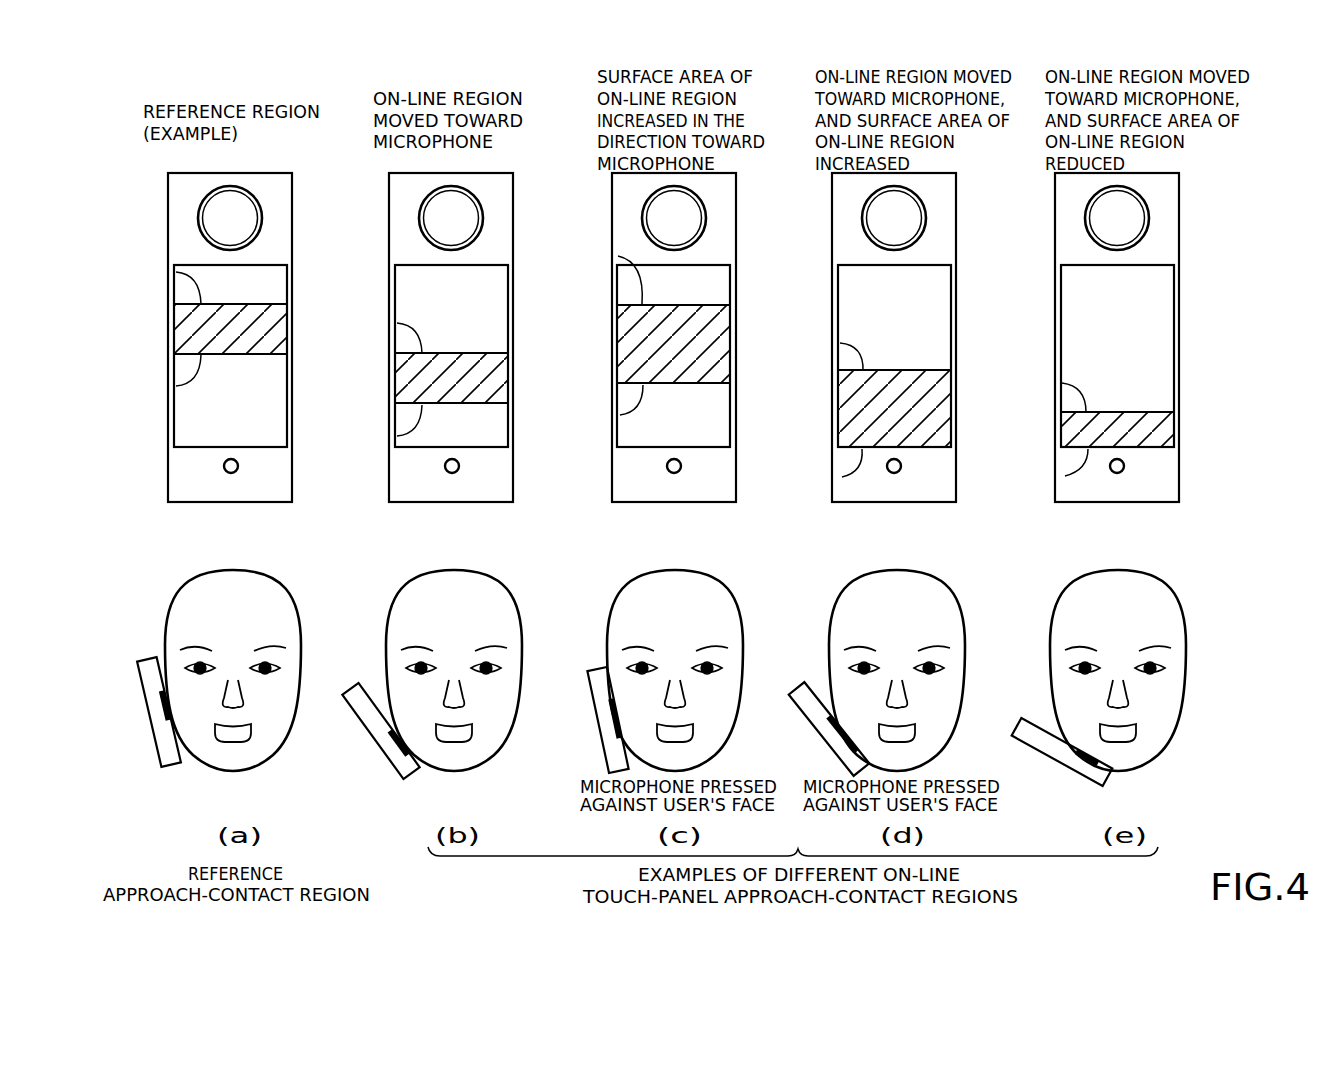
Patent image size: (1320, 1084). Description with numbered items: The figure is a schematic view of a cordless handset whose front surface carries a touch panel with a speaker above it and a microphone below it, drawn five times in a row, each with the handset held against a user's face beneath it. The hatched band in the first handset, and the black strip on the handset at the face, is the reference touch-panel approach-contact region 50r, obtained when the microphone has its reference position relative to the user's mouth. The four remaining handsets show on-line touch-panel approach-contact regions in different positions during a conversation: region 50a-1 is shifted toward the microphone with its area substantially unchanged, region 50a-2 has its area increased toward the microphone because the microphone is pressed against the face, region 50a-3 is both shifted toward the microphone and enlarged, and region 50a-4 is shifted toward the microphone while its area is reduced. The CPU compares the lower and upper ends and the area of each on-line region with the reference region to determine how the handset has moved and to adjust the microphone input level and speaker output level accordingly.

The reference touch-panel approach-contact region 50r is at (183, 323).
The on-line touch-panel approach-contact region 50a-1 is at (410, 379).
The on-line touch-panel approach-contact region 50a-2 is at (632, 339).
The on-line touch-panel approach-contact region 50a-3 is at (848, 406).
The on-line touch-panel approach-contact region 50a-4 is at (1075, 424).